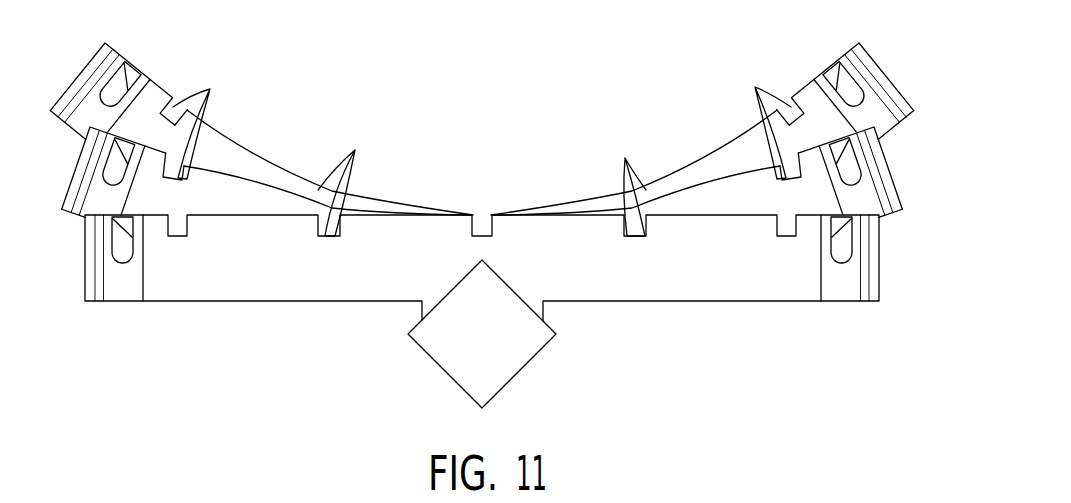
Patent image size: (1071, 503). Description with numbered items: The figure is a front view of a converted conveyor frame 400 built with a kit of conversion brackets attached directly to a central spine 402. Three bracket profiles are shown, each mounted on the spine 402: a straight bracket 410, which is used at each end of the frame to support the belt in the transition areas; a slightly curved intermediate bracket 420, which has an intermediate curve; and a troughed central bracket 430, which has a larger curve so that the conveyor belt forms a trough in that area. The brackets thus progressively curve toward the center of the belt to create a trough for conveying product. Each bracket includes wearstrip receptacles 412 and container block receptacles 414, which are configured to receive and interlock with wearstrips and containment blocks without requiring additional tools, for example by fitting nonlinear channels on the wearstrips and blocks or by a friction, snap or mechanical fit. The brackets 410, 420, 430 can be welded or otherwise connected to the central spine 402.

The converted conveyor frame 400 is at (518, 120).
The central spine 402 is at (516, 368).
The straight bracket 410 is at (729, 290).
The wearstrip receptacle 412 is at (625, 158).
The container block receptacle 414 is at (127, 82).
The intermediate bracket 420 is at (889, 178).
The central bracket 430 is at (723, 157).